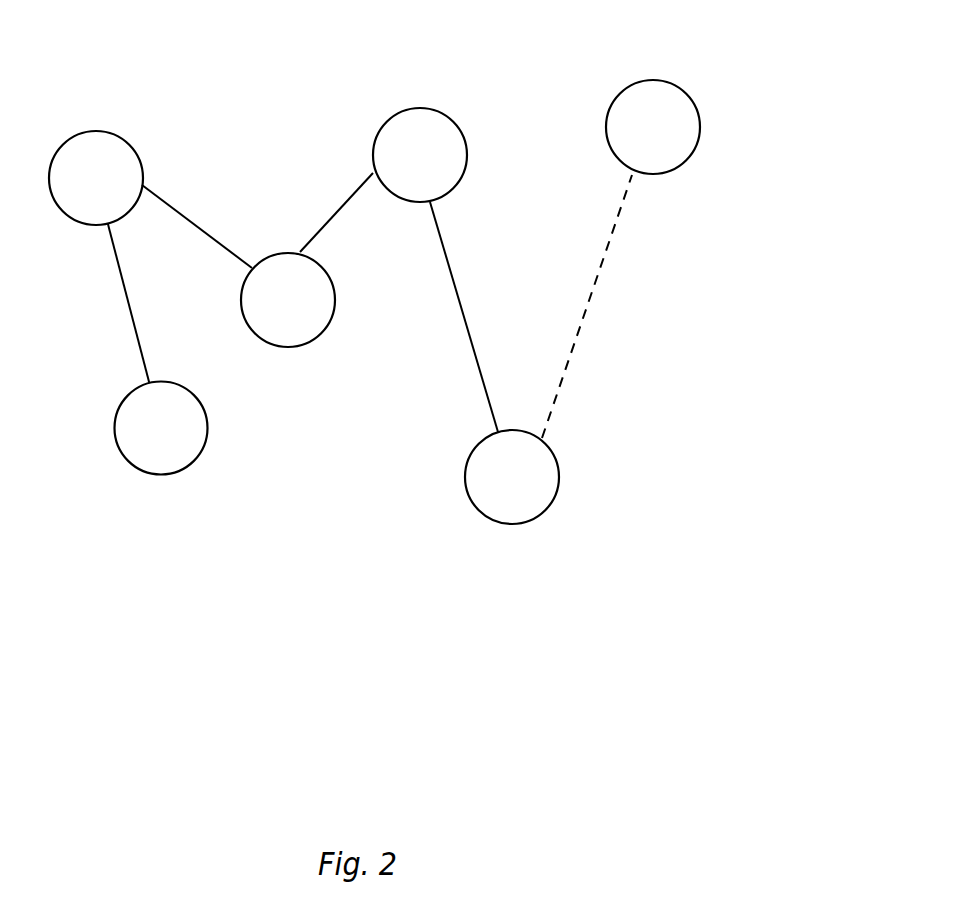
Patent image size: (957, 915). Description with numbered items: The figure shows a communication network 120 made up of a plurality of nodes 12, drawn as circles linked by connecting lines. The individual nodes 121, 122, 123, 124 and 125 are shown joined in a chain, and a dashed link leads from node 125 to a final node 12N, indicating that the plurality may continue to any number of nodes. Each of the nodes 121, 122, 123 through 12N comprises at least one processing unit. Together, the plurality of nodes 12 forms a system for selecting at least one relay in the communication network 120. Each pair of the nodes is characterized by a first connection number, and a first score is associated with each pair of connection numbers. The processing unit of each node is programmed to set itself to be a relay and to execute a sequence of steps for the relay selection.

The node 12 is at (374, 302).
The communication network 120 is at (433, 274).
The node 121 is at (161, 428).
The node 122 is at (96, 178).
The node 123 is at (288, 300).
The node 124 is at (420, 155).
The node 125 is at (512, 477).
The node 12N is at (653, 127).